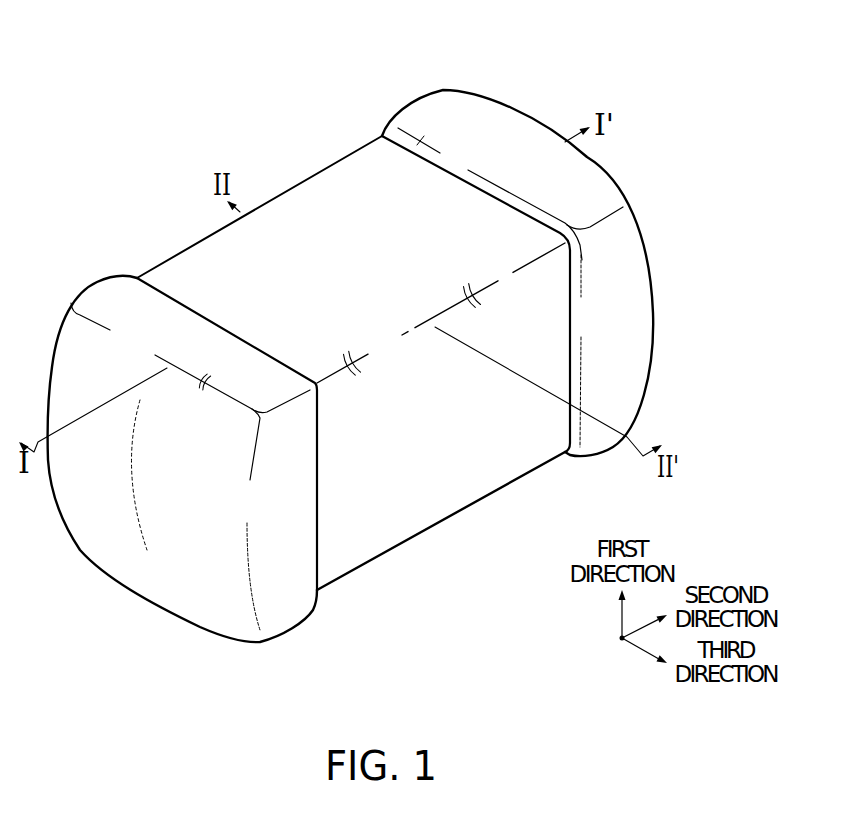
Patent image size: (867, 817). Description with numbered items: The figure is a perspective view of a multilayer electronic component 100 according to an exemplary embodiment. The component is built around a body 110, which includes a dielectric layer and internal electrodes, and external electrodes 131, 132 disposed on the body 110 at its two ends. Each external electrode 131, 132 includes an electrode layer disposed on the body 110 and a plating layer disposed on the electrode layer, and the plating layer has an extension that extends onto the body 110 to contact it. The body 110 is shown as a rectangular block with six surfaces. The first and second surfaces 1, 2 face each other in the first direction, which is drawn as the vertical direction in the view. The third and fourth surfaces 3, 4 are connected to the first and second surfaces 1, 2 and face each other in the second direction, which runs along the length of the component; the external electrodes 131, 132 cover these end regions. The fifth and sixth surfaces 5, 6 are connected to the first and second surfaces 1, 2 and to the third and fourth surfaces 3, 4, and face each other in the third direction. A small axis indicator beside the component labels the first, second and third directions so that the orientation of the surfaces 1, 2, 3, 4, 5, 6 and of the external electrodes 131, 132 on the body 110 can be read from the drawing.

The multilayer electronic component 100 is at (190, 32).
The body 110 is at (310, 193).
The external electrode 131 is at (100, 284).
The external electrode 132 is at (425, 103).
The first surface 1 is at (416, 548).
The second surface 2 is at (362, 176).
The third surface 3 is at (99, 515).
The fourth surface 4 is at (489, 120).
The fifth surface 5 is at (186, 249).
The sixth surface 6 is at (490, 472).